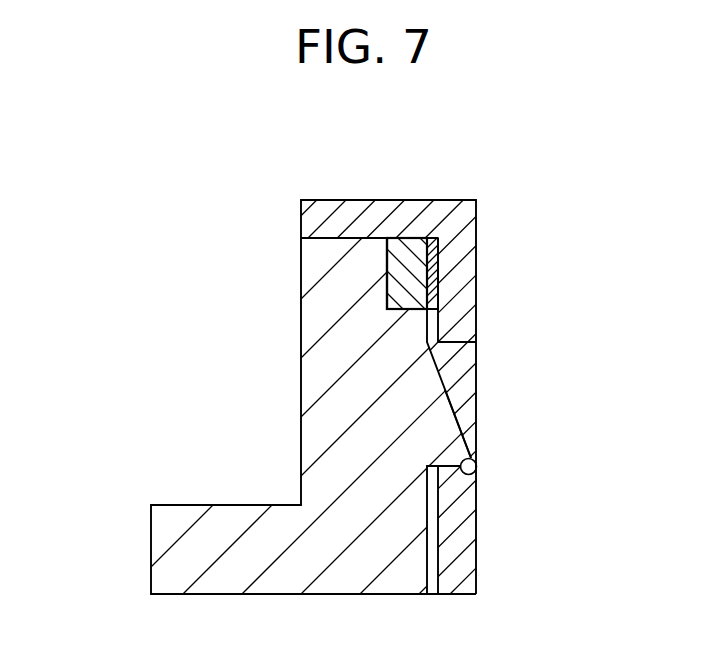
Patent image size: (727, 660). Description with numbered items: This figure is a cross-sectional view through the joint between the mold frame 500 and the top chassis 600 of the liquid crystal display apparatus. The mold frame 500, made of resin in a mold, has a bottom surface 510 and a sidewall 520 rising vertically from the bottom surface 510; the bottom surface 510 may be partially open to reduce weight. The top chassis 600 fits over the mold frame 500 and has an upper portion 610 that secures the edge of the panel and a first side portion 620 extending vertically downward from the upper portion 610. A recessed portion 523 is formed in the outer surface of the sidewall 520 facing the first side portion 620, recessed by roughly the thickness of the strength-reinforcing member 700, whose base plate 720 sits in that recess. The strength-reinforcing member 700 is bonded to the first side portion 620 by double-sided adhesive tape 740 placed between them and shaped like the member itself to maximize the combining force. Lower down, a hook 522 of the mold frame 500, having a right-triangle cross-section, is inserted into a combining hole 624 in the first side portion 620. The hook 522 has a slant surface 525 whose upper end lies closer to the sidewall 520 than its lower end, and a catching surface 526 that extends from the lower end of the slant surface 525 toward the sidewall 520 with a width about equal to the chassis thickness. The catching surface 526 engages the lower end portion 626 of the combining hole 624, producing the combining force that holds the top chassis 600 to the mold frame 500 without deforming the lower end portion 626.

The mold frame 500 is at (140, 499).
The bottom surface 510 is at (302, 582).
The sidewall 520 is at (317, 254).
The recessed portion 523 is at (388, 280).
The hook 522 is at (448, 364).
The slant surface 525 is at (463, 420).
The catching surface 526 is at (472, 455).
The top chassis 600 is at (492, 195).
The upper portion 610 is at (342, 215).
The first side portion 620 is at (462, 290).
The combining hole 624 is at (464, 395).
The lower end portion 626 is at (476, 480).
The strength-reinforcing member 700 is at (430, 220).
The base plate 720 is at (397, 257).
The double-sided adhesive tape 740 is at (434, 254).